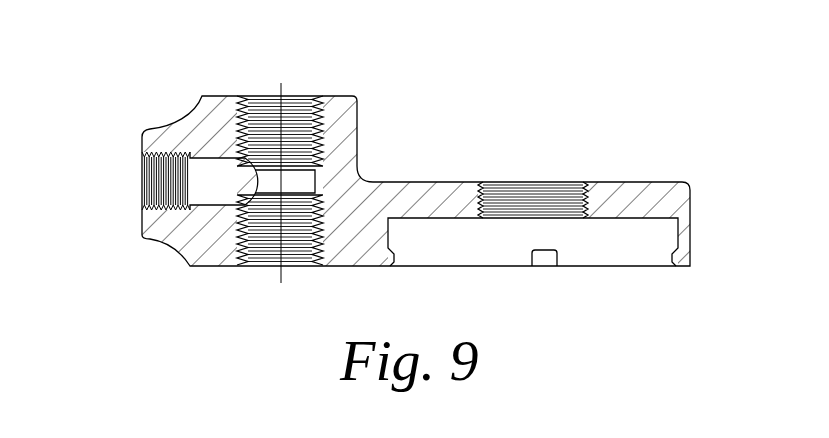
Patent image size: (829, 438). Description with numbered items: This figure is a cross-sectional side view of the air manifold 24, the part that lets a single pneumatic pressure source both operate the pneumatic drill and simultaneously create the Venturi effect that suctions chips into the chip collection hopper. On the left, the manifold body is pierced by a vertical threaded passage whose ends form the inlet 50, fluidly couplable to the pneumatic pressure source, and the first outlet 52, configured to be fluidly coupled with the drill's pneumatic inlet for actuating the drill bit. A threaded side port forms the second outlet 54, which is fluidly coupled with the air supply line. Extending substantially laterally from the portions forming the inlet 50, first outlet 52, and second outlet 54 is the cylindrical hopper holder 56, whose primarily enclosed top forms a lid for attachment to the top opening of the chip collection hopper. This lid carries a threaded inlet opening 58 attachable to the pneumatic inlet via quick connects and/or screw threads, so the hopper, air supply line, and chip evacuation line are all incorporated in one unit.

The air manifold 24 is at (508, 88).
The inlet 50 is at (257, 268).
The first outlet 52 is at (262, 96).
The second outlet 54 is at (143, 183).
The cylindrical hopper holder 56 is at (683, 233).
The inlet opening 58 is at (561, 182).